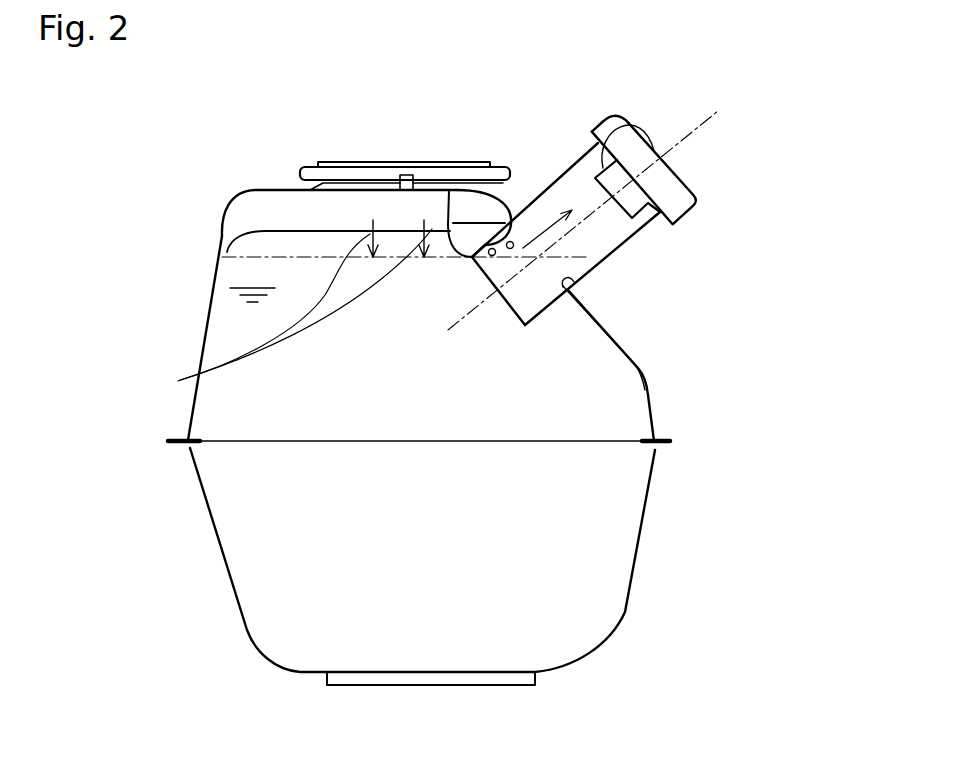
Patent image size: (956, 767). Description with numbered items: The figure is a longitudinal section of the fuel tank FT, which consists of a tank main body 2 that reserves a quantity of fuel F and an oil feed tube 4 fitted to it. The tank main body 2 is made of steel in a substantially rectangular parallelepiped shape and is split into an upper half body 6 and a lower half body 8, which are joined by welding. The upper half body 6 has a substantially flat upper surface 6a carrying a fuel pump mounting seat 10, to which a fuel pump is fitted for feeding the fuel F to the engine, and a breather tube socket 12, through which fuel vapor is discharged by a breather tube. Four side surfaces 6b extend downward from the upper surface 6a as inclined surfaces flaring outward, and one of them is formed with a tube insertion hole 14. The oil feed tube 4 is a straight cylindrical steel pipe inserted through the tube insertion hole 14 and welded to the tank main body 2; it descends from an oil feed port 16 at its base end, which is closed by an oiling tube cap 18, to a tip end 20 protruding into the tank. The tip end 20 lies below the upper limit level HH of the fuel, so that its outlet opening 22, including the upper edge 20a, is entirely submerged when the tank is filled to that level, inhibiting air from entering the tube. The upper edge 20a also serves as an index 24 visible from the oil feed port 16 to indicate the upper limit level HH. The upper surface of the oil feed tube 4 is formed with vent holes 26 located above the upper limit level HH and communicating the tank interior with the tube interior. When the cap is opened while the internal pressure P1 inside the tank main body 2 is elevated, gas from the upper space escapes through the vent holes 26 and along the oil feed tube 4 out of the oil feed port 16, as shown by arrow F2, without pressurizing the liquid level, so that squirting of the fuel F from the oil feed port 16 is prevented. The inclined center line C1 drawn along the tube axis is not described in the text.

The tank main body 2 is at (712, 408).
The oil feed tube 4 is at (633, 262).
The upper half body 6 is at (655, 421).
The upper surface 6a is at (268, 191).
The side surfaces 6b is at (216, 300).
The lower half body 8 is at (652, 474).
The fuel pump mounting seat 10 is at (352, 161).
The breather tube socket 12 is at (408, 172).
The tube insertion hole 14 is at (568, 279).
The oil feed port 16 is at (647, 162).
The oiling tube cap 18 is at (600, 126).
The tip end 20 is at (523, 322).
The upper edge 20a is at (449, 195).
The outlet opening 22 is at (497, 290).
The index 24 is at (476, 162).
The vent hole 26 is at (513, 245).
The upper limit level HH is at (218, 234).
The fuel F is at (244, 307).
The arrow F2 is at (523, 248).
The internal pressure P1 is at (287, 314).
The fuel tank FT is at (238, 653).
The spout axis C1 is at (705, 123).